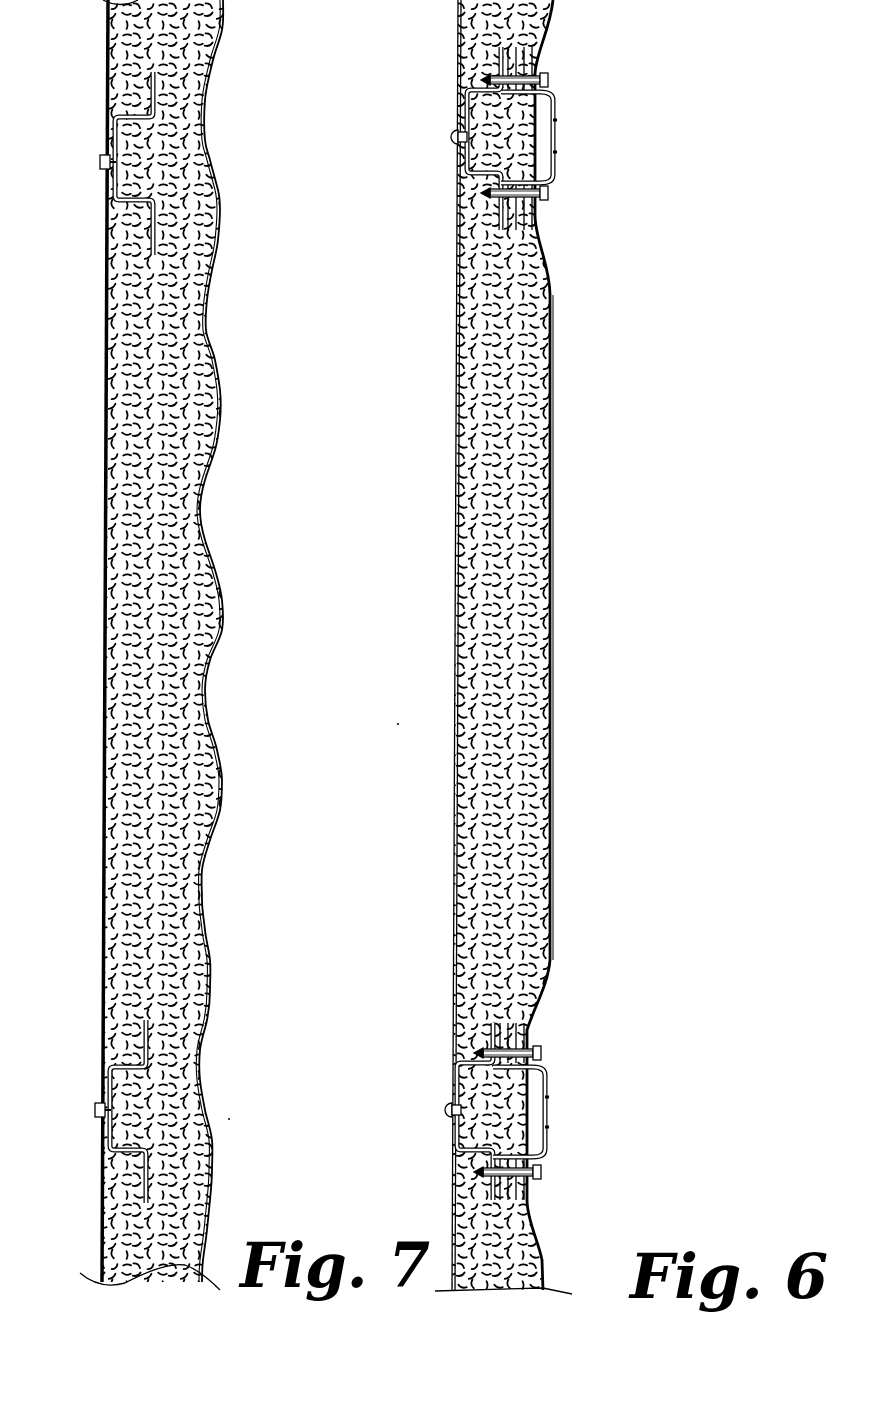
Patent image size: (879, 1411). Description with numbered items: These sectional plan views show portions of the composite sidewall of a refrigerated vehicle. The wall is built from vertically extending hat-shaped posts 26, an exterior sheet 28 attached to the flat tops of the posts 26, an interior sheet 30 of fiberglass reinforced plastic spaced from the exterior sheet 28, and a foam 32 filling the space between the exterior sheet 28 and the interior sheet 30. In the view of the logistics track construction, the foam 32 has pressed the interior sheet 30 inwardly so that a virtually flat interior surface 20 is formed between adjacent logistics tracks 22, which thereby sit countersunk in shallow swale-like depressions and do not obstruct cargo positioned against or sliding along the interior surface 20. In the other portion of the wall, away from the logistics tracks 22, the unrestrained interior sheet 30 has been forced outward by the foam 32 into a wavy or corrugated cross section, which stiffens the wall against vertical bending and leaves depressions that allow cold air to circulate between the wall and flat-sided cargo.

In FIG. 6, the interior surface 20 is at (552, 666).
In FIG. 6, the logistics track 22 is at (556, 116).
In FIG. 7, the post 26 is at (118, 118).
In FIG. 6, the post 26 is at (482, 98).
In FIG. 7, the exterior sheet 28 is at (106, 549).
In FIG. 6, the exterior sheet 28 is at (488, 447).
In FIG. 7, the interior sheet 30 is at (204, 856).
In FIG. 6, the interior sheet 30 is at (551, 956).
In FIG. 7, the foam 32 is at (200, 749).